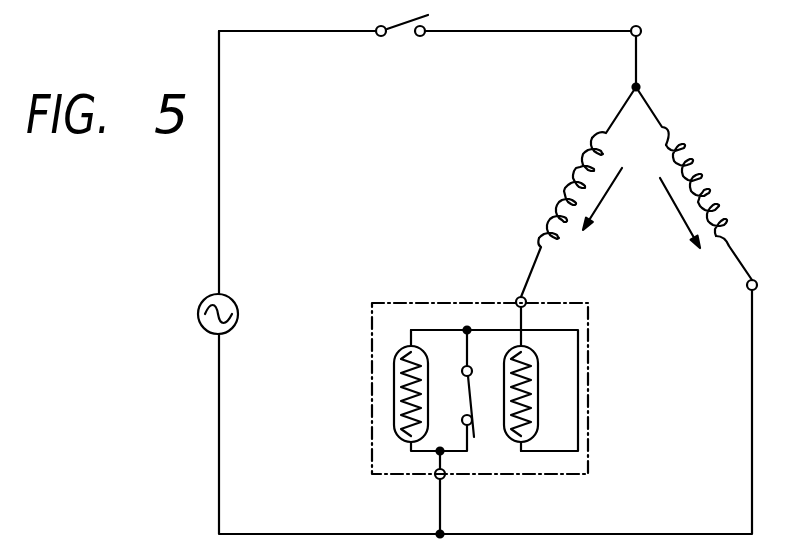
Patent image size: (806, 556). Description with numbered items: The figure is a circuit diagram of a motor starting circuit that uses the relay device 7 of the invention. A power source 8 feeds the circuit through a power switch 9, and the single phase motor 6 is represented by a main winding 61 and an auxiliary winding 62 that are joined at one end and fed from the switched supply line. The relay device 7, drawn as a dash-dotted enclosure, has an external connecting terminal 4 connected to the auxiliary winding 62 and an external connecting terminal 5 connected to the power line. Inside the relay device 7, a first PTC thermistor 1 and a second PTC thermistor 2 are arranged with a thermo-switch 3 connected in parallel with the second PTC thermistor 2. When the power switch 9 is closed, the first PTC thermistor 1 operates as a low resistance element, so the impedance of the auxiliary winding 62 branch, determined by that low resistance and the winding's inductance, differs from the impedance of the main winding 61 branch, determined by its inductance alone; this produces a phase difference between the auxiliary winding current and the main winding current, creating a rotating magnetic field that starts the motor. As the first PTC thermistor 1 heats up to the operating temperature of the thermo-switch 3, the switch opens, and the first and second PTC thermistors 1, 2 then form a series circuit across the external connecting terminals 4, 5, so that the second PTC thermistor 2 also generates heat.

The first PTC thermistor 1 is at (540, 385).
The second PTC thermistor 2 is at (393, 368).
The thermo-switch 3 is at (462, 387).
The external connecting terminal 4 is at (514, 298).
The external connecting terminal 5 is at (434, 480).
The motor 6 is at (639, 161).
The main winding 61 is at (700, 163).
The auxiliary winding 62 is at (580, 158).
The relay device 7 is at (385, 303).
The power source 8 is at (238, 300).
The power switch 9 is at (404, 41).